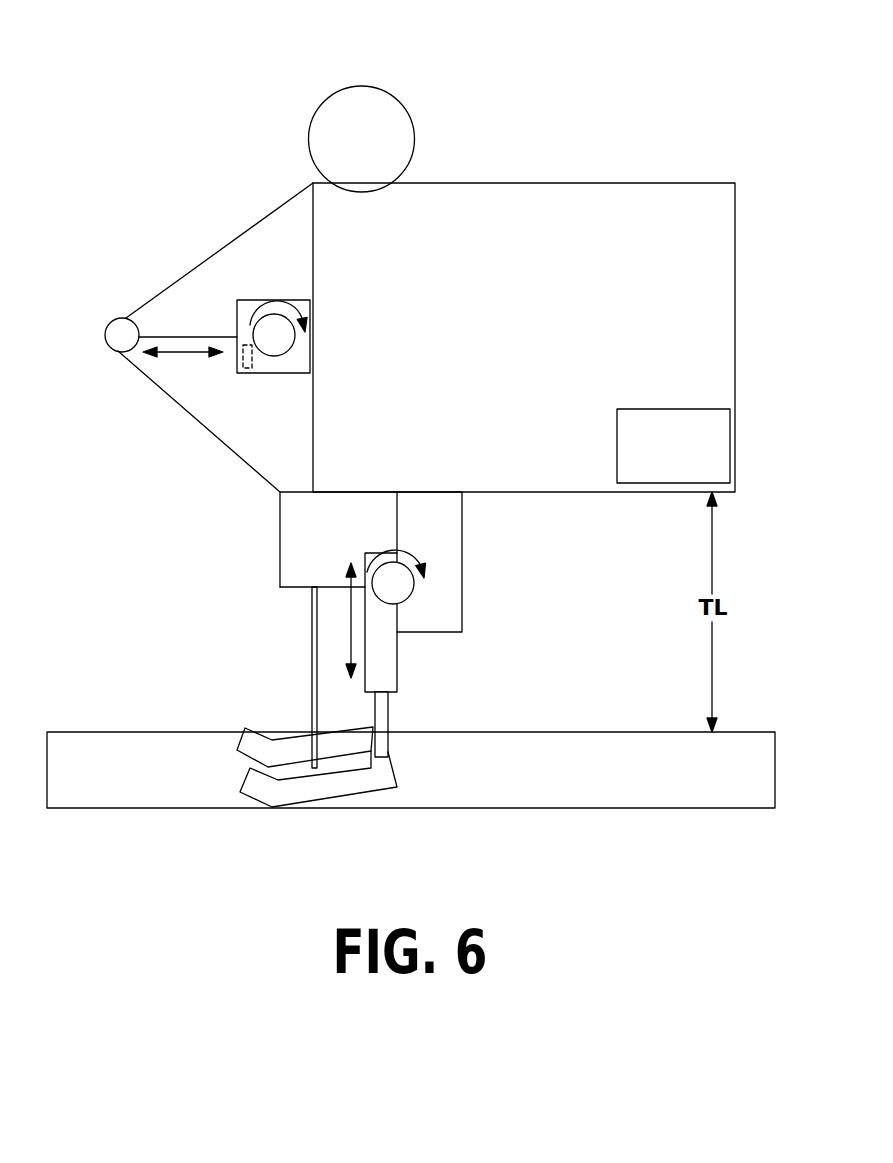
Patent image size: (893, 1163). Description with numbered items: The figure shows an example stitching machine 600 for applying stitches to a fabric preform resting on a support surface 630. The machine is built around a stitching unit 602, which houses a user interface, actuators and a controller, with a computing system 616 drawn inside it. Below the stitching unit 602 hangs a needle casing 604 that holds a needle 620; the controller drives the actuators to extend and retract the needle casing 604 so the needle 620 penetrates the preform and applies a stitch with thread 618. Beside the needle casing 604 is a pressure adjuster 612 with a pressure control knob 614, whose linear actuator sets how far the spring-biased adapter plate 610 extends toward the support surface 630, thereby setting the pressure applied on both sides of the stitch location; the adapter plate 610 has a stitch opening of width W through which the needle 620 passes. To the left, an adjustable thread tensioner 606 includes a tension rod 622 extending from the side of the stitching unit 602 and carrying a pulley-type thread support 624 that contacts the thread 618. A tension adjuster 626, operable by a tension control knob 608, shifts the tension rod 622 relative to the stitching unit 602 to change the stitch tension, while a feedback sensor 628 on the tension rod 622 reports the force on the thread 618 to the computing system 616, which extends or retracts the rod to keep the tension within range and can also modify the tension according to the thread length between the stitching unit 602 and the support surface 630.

The stitching machine 600 is at (70, 71).
The stitching unit 602 is at (606, 183).
The needle casing 604 is at (280, 540).
The adjustable thread tensioner 606 is at (160, 300).
The tension control knob 608 is at (276, 356).
The adapter plate 610 is at (418, 711).
The pressure adjuster 612 is at (398, 645).
The pressure control knob 614 is at (414, 592).
The computing system 616 is at (662, 409).
The thread 618 is at (220, 247).
The needle 620 is at (311, 672).
The tension rod 622 is at (230, 336).
The thread support 624 is at (106, 331).
The tension adjuster 626 is at (313, 349).
The feedback sensor 628 is at (248, 374).
The support surface 630 is at (636, 732).
The width W is at (285, 718).